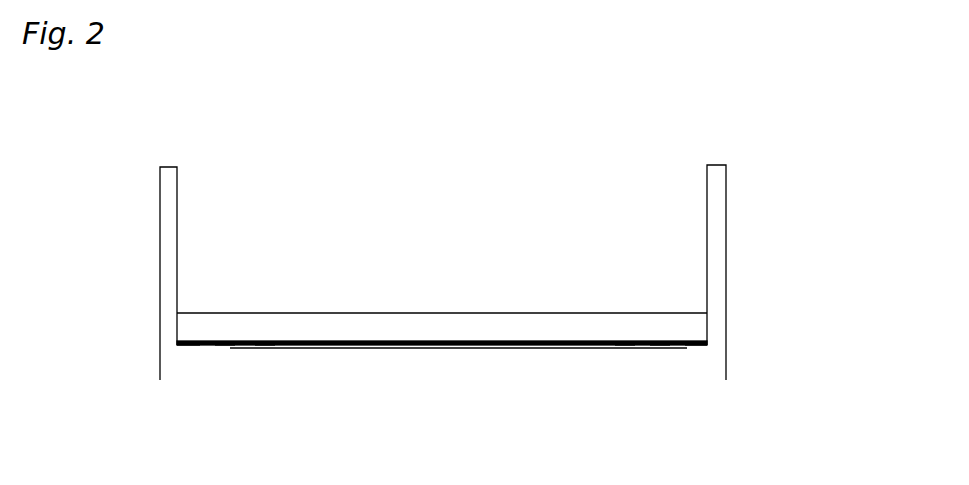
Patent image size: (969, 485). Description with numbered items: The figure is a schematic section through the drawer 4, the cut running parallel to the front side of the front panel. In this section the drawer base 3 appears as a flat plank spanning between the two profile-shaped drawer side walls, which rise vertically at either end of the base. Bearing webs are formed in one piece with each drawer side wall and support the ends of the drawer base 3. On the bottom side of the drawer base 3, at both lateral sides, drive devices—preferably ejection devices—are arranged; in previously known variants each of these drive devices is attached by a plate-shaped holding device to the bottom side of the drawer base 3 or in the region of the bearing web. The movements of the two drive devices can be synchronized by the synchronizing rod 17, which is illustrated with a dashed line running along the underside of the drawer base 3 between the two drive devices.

The drawer base 3 is at (416, 330).
The drawer 4 is at (674, 122).
The synchronizing rod 17 is at (463, 348).